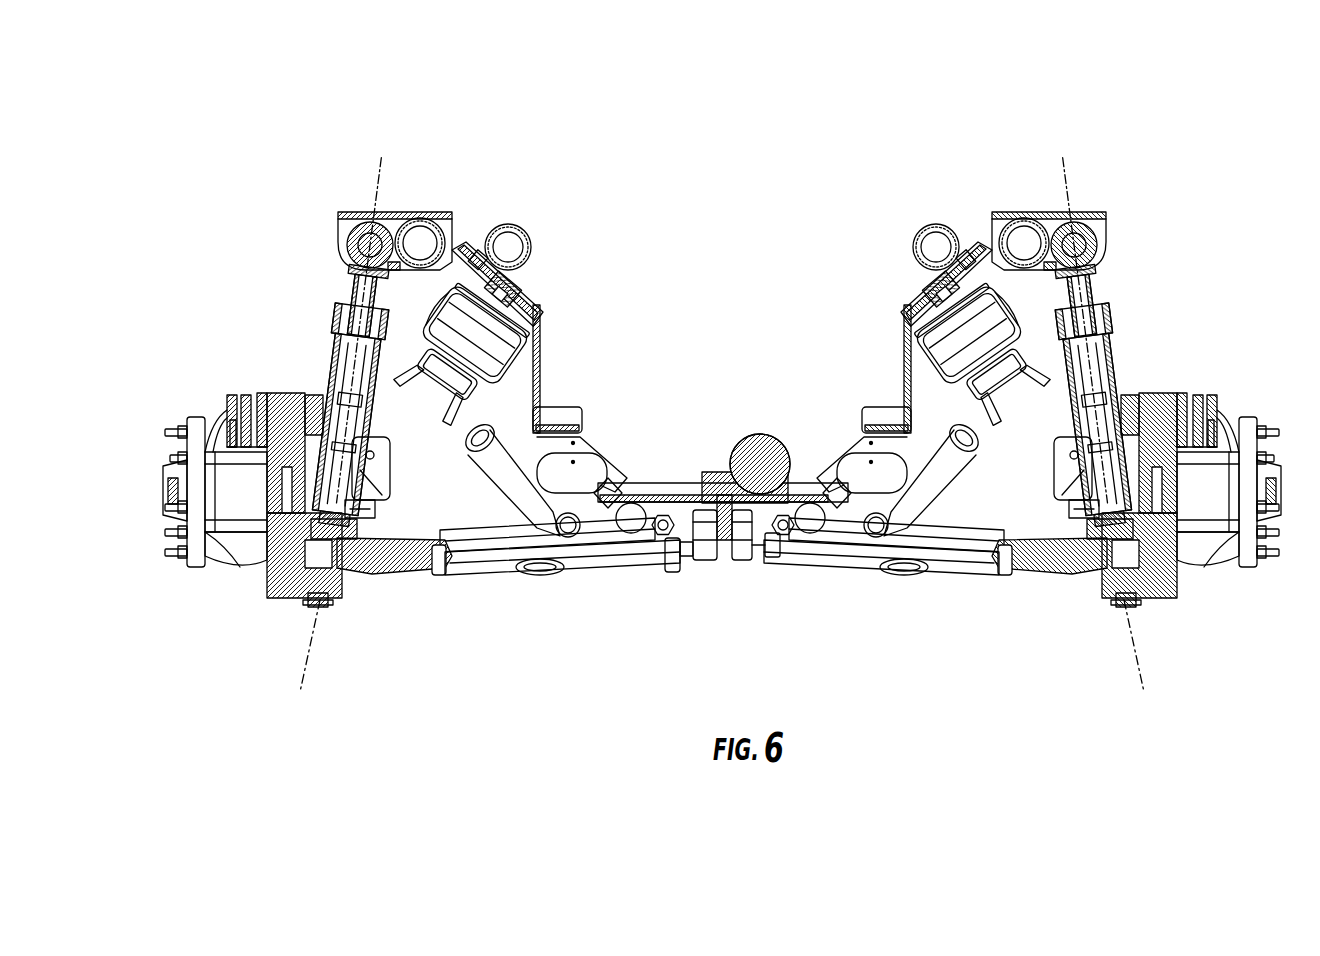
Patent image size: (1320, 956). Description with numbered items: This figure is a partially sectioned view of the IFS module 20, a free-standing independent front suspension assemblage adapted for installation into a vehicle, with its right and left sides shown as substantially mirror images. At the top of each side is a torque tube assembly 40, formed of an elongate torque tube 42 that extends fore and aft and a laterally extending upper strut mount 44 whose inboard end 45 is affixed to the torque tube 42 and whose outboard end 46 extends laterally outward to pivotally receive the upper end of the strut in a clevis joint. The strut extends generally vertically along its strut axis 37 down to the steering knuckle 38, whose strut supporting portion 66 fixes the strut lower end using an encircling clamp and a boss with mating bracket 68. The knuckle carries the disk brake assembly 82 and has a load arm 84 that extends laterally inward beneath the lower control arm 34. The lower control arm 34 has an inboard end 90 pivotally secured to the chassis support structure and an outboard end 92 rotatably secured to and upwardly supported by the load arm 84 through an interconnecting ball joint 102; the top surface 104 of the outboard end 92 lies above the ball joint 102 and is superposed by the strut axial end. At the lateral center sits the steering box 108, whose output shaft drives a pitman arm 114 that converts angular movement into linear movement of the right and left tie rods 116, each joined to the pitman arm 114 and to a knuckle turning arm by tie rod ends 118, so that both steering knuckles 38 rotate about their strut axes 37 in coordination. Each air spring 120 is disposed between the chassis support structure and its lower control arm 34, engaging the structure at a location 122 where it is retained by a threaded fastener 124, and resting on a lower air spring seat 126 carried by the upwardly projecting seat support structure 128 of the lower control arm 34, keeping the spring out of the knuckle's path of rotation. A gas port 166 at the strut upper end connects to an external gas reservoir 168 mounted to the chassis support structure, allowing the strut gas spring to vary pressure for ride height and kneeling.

The IFS module 20 is at (1189, 168).
The lower control arm 34 is at (930, 565).
The strut axis 37 is at (312, 648).
The steering knuckle 38 is at (1160, 590).
The torque tube assembly 40 is at (412, 184).
The torque tube 42 is at (452, 266).
The upper strut mount 44 is at (1082, 215).
The inboard end 45 is at (1103, 232).
The outboard end 46 is at (1000, 225).
The strut supporting portion 66 is at (1112, 400).
The bracket 68 is at (1075, 525).
The disk brake assembly 82 is at (193, 398).
The load arm 84 is at (1105, 588).
The inboard end 90 is at (813, 545).
The outboard end 92 is at (1070, 565).
The ball joint 102 is at (1120, 610).
The top surface 104 is at (1085, 530).
The steering box 108 is at (752, 438).
The pitman arm 114 is at (700, 560).
The tie rod 116 is at (590, 568).
The tie rod end 118 is at (680, 565).
The air spring 120 is at (507, 362).
The location 122 is at (508, 313).
The threaded fastener 124 is at (518, 280).
The lower air spring seat 126 is at (447, 378).
The seat support structure 128 is at (508, 470).
The gas port 166 is at (1028, 243).
The gas reservoir 168 is at (428, 232).